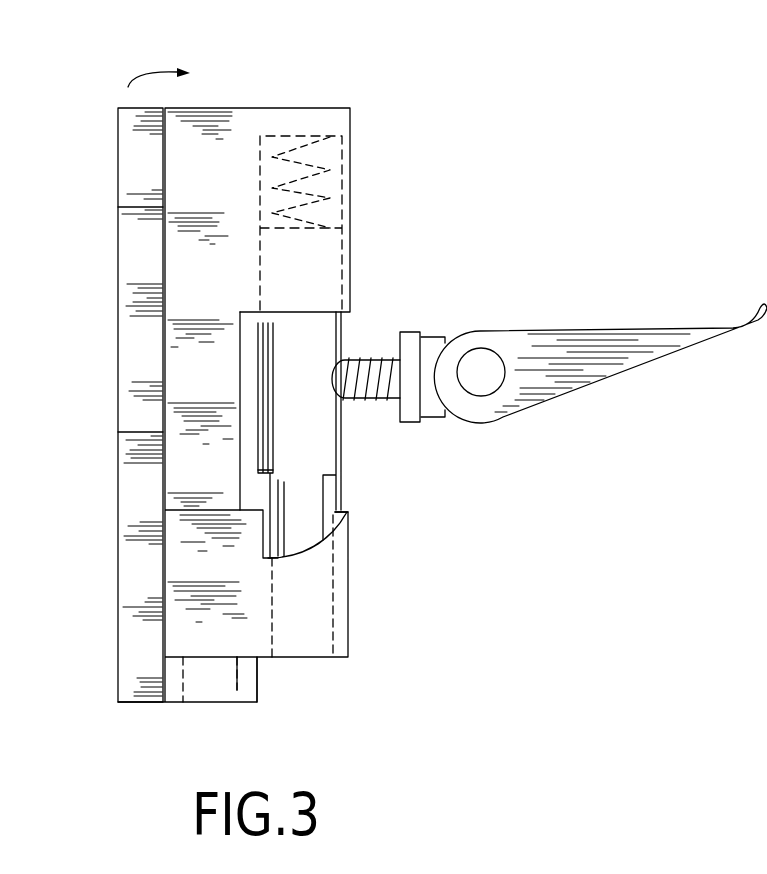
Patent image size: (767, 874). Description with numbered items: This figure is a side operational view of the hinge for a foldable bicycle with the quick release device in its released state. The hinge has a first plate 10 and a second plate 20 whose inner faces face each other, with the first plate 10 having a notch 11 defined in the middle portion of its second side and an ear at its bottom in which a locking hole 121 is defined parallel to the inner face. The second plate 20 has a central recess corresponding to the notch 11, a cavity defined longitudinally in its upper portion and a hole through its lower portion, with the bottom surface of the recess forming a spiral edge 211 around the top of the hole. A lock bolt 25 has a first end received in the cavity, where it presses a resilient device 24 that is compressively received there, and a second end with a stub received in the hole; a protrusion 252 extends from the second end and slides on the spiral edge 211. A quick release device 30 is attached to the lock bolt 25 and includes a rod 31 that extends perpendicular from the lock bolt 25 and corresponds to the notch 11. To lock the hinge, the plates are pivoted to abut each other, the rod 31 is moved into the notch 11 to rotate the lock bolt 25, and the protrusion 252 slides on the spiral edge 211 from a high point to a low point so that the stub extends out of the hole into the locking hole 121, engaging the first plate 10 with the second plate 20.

The first plate 10 is at (133, 172).
The notch 11 is at (117, 427).
The second plate 20 is at (257, 120).
The resilient device 24 is at (345, 174).
The lock bolt 25 is at (338, 335).
The protrusion 252 is at (275, 473).
The spiral edge 211 is at (328, 537).
The locking hole 121 is at (237, 687).
The quick release device 30 is at (518, 322).
The rod 31 is at (368, 392).